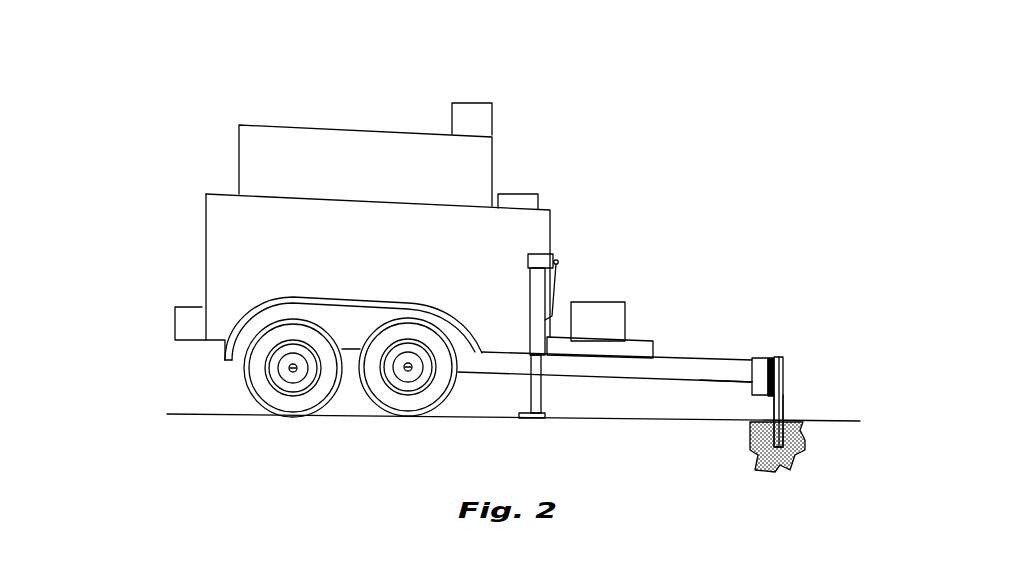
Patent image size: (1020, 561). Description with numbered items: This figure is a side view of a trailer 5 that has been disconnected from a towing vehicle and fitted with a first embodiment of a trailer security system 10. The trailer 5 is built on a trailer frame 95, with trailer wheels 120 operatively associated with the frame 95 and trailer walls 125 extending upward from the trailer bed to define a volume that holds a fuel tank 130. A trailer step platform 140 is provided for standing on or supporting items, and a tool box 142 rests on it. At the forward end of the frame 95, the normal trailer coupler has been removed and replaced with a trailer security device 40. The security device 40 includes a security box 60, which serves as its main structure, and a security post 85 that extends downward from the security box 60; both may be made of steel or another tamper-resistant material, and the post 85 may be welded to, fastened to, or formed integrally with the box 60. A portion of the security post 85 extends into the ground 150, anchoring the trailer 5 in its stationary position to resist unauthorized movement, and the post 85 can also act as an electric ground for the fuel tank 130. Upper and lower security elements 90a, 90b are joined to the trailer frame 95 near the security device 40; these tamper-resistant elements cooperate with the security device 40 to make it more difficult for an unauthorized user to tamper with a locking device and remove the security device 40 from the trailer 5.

The trailer 5 is at (648, 127).
The trailer security system 10 is at (724, 308).
The trailer security device 40 is at (786, 352).
The security box 60 is at (766, 362).
The security post 85 is at (784, 393).
The upper security element 90a is at (726, 358).
The lower security element 90b is at (738, 392).
The trailer frame 95 is at (560, 372).
The trailer wheels 120 is at (312, 396).
The trailer walls 125 is at (204, 235).
The fuel tank 130 is at (332, 152).
The trailer step platform 140 is at (650, 343).
The tool box 142 is at (586, 302).
The ground 150 is at (785, 468).